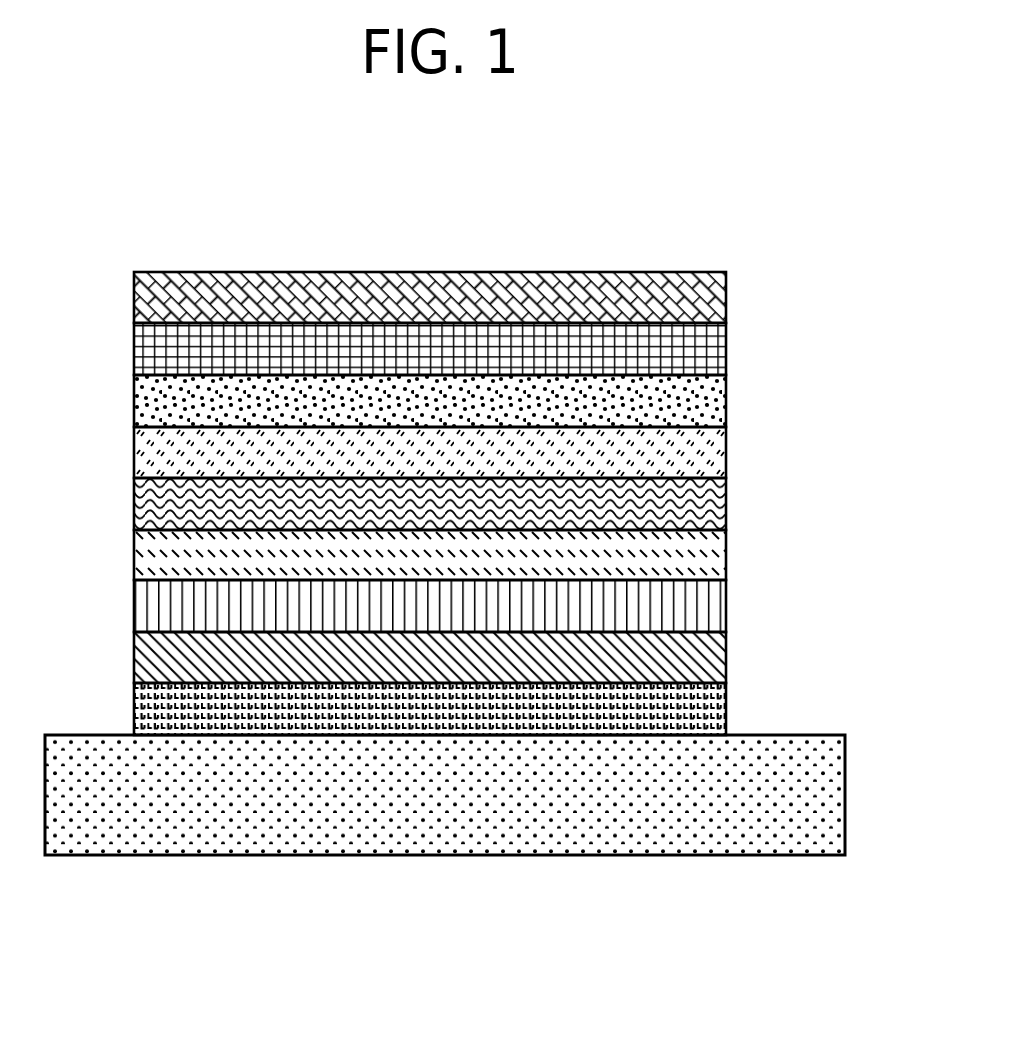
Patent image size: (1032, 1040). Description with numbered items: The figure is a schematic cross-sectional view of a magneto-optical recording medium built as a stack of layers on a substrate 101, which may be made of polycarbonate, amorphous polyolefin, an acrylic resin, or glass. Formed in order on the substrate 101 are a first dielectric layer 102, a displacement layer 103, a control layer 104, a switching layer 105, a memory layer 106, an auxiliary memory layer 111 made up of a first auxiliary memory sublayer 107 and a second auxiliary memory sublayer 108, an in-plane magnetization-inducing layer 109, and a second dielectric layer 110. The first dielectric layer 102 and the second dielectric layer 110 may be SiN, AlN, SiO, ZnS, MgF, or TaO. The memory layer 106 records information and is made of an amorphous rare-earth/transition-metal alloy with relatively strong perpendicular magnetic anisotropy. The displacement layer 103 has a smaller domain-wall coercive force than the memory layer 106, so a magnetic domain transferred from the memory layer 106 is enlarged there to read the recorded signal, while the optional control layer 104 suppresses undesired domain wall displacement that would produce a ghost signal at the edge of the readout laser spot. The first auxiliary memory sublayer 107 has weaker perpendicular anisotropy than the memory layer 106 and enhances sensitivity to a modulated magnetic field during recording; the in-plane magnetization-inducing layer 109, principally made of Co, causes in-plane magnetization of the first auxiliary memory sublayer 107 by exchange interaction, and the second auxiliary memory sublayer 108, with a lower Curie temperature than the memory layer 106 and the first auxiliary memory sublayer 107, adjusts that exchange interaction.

The substrate 101 is at (803, 804).
The first dielectric layer 102 is at (727, 708).
The displacement layer 103 is at (727, 656).
The control layer 104 is at (727, 604).
The switching layer 105 is at (727, 552).
The memory layer 106 is at (727, 500).
The first auxiliary memory sublayer 107 is at (727, 448).
The second auxiliary memory sublayer 108 is at (727, 396).
The in-plane magnetization-inducing layer 109 is at (727, 344).
The second dielectric layer 110 is at (727, 294).
The auxiliary memory layer 111 is at (429, 421).